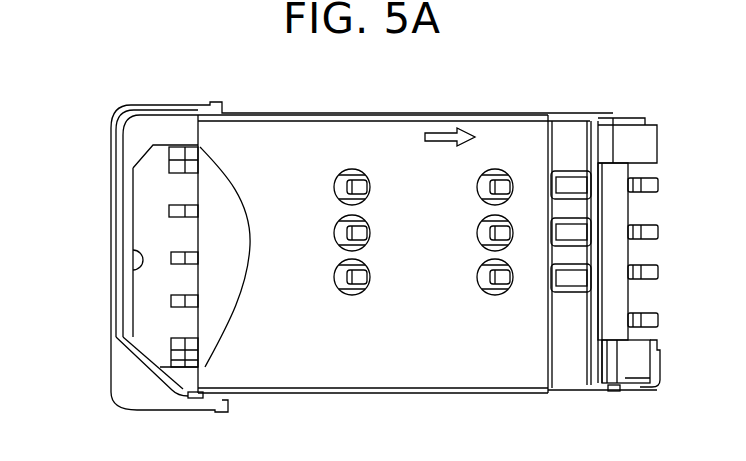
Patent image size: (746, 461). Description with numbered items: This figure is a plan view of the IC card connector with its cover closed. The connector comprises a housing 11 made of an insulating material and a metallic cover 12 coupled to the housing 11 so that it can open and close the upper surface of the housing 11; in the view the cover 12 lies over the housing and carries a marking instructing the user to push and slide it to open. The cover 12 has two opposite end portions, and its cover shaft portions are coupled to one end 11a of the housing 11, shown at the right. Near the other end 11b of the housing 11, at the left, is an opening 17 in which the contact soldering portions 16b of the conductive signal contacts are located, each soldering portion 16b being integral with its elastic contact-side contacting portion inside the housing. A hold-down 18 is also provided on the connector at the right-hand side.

The housing 11 is at (140, 392).
The one end of the housing 11a is at (658, 373).
The other end of the housing 11b is at (115, 362).
The metallic cover 12 is at (329, 140).
The contact soldering portion 16b is at (169, 208).
The opening 17 is at (133, 278).
The hold-down 18 is at (658, 320).